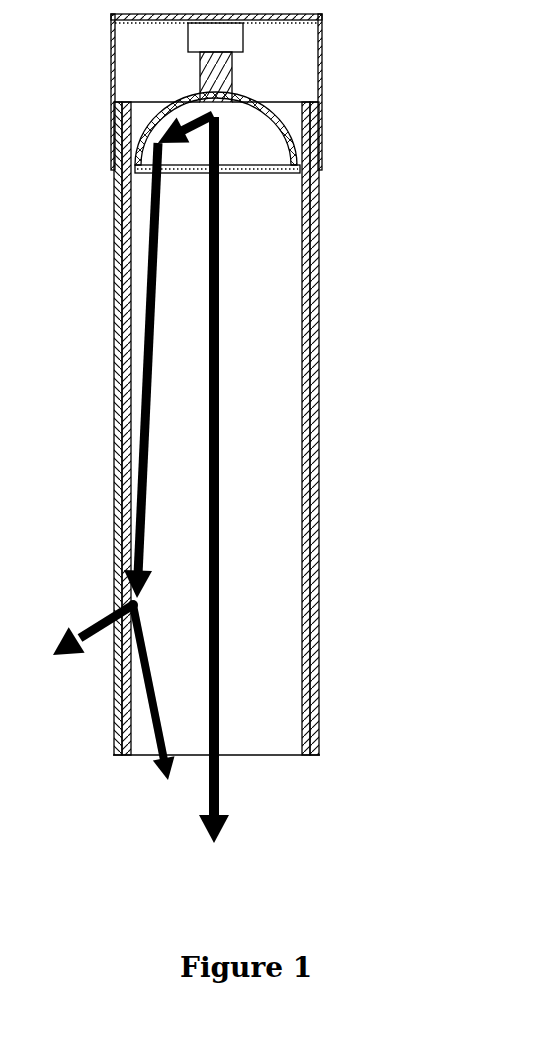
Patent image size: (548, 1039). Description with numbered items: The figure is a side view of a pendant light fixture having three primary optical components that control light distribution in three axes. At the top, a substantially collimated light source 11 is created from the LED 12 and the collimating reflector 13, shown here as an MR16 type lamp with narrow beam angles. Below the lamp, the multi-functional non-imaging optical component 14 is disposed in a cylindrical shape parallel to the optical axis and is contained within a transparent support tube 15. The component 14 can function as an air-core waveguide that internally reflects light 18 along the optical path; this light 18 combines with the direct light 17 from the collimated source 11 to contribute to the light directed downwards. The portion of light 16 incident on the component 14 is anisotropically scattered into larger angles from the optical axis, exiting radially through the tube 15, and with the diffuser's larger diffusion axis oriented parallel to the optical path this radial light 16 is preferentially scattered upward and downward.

The substantially collimated light source 11 is at (298, 47).
The LED 12 is at (222, 110).
The collimating reflector 13 is at (285, 140).
The multi-functional non-imaging optical component 14 is at (305, 410).
The transparent support tube 15 is at (317, 470).
The light scattered radially 16 is at (85, 630).
The direct light 17 is at (222, 503).
The internally reflected light 18 is at (151, 712).